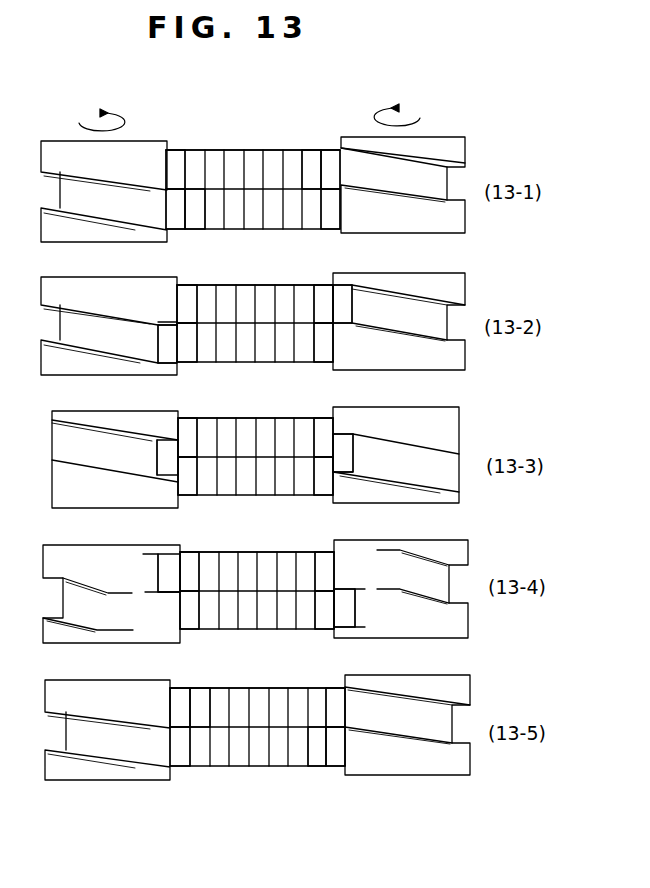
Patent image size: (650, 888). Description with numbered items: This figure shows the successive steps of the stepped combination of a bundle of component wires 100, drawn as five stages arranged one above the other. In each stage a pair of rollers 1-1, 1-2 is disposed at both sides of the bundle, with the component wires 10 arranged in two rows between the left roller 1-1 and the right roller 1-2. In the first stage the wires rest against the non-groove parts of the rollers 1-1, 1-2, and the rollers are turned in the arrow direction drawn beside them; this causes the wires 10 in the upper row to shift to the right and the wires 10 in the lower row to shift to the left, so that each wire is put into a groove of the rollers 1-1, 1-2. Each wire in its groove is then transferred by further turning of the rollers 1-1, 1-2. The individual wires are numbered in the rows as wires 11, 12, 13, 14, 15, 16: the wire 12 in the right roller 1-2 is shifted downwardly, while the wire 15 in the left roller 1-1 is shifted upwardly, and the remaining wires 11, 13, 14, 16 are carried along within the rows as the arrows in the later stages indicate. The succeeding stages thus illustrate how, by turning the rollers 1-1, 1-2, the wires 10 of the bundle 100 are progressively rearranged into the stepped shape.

The roller 1-1 is at (60, 150).
The roller 1-2 is at (443, 146).
The bundle of component wires 100 is at (240, 125).
The wire 10 is at (293, 150).
The sliding element 11 is at (344, 710).
The wire No. 12 is at (344, 748).
The sliding element 13 is at (330, 347).
The sliding element 14 is at (173, 750).
The wire No. 15 is at (187, 712).
The sliding element 16 is at (195, 312).